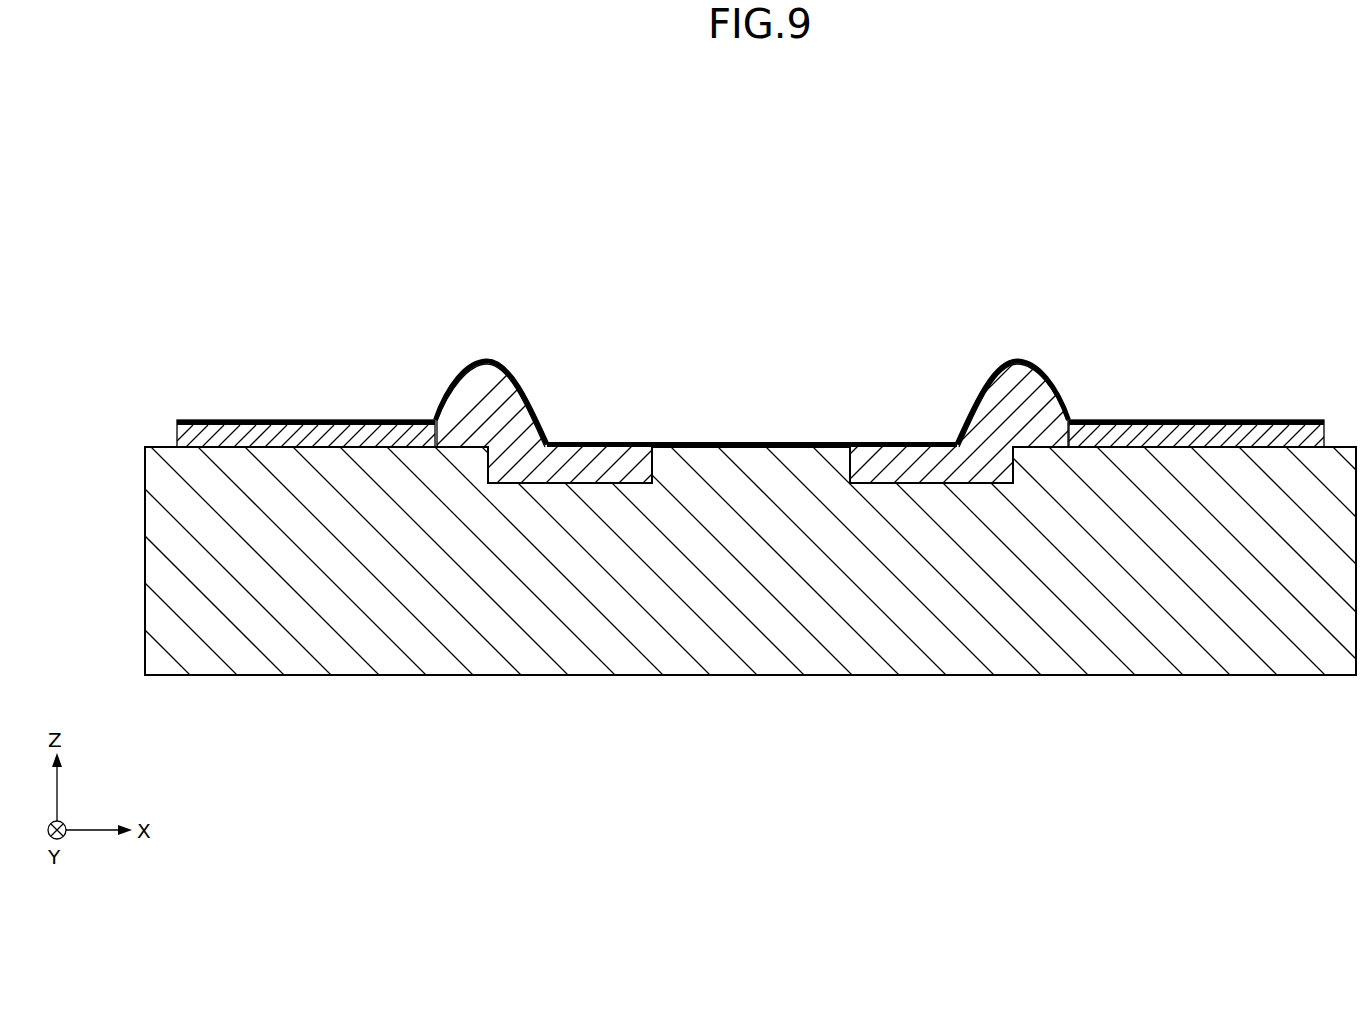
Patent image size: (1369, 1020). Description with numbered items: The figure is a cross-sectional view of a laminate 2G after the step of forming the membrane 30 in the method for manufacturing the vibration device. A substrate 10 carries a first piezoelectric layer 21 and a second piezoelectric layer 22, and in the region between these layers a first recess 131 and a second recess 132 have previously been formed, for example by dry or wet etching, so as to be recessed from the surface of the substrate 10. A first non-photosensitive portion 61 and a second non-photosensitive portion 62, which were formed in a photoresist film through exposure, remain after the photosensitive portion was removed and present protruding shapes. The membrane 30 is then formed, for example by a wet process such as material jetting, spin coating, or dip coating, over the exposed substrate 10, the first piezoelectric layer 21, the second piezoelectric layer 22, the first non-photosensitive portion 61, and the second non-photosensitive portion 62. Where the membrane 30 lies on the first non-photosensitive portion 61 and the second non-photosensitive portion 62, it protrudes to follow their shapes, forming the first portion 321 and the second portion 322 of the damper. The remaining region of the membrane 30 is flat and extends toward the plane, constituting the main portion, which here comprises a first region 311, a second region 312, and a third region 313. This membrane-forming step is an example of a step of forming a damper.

The laminate 2G is at (718, 245).
The substrate 10 is at (168, 563).
The first recess 131 is at (570, 483).
The second recess 132 is at (930, 483).
The first piezoelectric layer 21 is at (322, 428).
The second piezoelectric layer 22 is at (1185, 427).
The membrane 30 is at (750, 356).
The first region 311 is at (270, 420).
The second region 312 is at (1232, 420).
The third region 313 is at (788, 440).
The first portion 321 is at (487, 359).
The second portion 322 is at (1017, 359).
The first non-photosensitive portion 61 is at (495, 408).
The second non-photosensitive portion 62 is at (1008, 410).